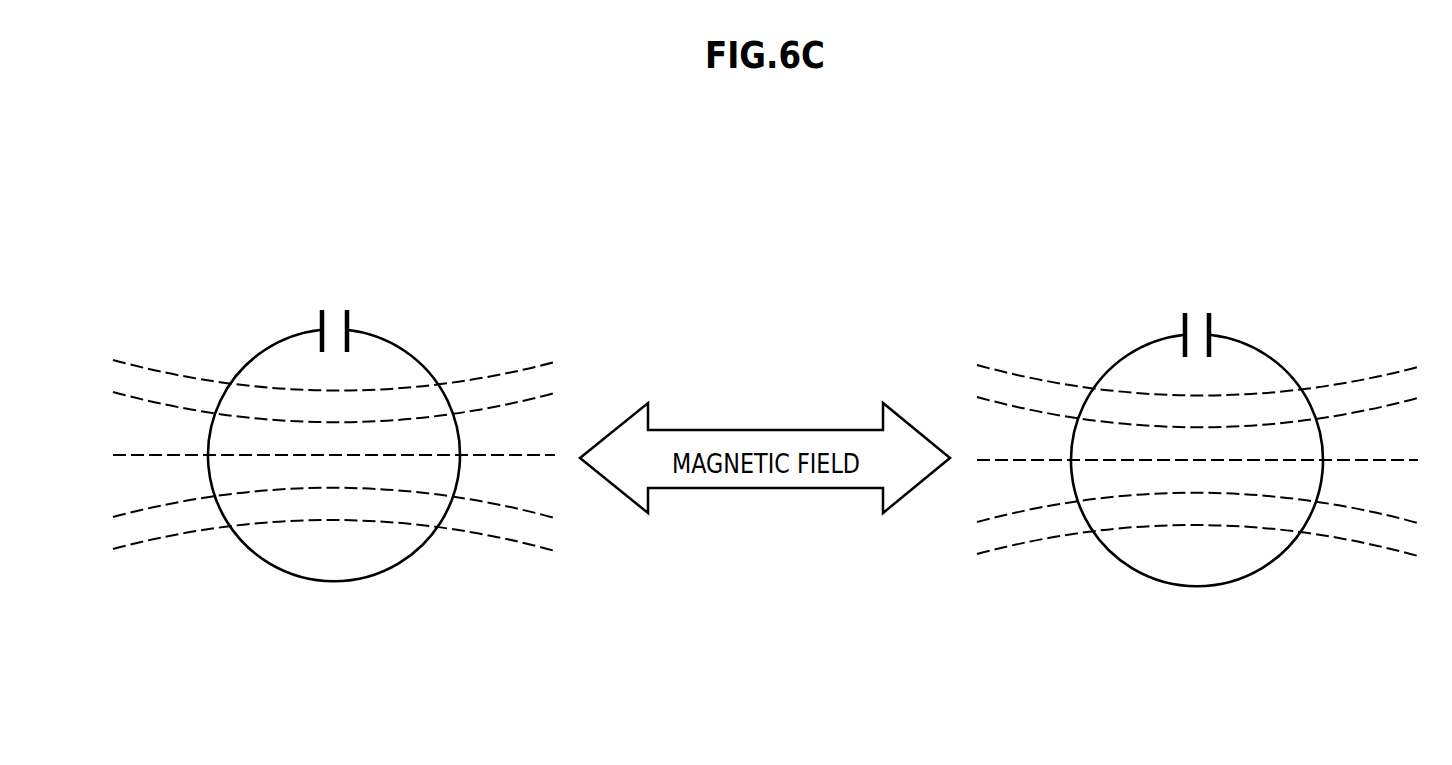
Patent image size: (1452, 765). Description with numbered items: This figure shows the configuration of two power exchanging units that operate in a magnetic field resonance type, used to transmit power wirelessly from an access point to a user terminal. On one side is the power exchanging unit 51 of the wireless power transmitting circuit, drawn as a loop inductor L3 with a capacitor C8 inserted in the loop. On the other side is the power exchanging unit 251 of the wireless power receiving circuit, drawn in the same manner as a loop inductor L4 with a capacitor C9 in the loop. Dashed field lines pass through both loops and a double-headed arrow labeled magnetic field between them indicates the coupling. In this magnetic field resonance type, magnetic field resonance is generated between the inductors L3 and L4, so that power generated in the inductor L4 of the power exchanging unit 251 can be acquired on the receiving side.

The power exchanging unit 51 is at (300, 217).
The power exchanging unit 251 is at (1230, 223).
The capacitor C8 is at (318, 326).
The capacitor C9 is at (1213, 323).
The inductor L3 is at (335, 582).
The inductor L4 is at (1198, 588).